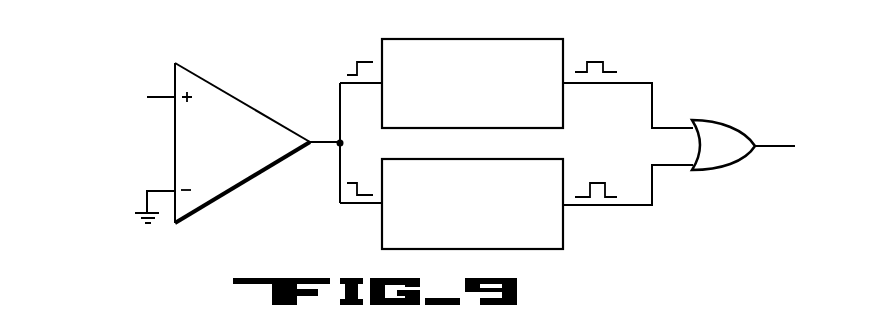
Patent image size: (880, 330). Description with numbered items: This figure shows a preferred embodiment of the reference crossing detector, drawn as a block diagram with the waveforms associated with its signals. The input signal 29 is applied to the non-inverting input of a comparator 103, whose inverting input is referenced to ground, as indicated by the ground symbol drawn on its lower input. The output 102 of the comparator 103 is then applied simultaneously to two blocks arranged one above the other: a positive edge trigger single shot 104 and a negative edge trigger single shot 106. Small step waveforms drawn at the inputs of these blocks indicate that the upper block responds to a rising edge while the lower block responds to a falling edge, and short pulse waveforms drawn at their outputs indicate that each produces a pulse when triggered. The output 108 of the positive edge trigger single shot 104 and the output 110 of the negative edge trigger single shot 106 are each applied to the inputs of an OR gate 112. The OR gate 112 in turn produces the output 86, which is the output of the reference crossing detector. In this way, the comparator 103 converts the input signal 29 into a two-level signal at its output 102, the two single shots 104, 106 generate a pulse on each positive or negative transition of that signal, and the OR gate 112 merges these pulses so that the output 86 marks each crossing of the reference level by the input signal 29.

The input signal 29 is at (110, 73).
The comparator 103 is at (227, 93).
The output of comparator 102 is at (318, 140).
The positive edge trigger single shot 104 is at (510, 39).
The negative edge trigger single shot 106 is at (510, 159).
The output of positive edge trigger single shot 108 is at (638, 83).
The output of negative edge trigger single shot 110 is at (630, 205).
The OR gate 112 is at (738, 123).
The output 86 is at (778, 147).